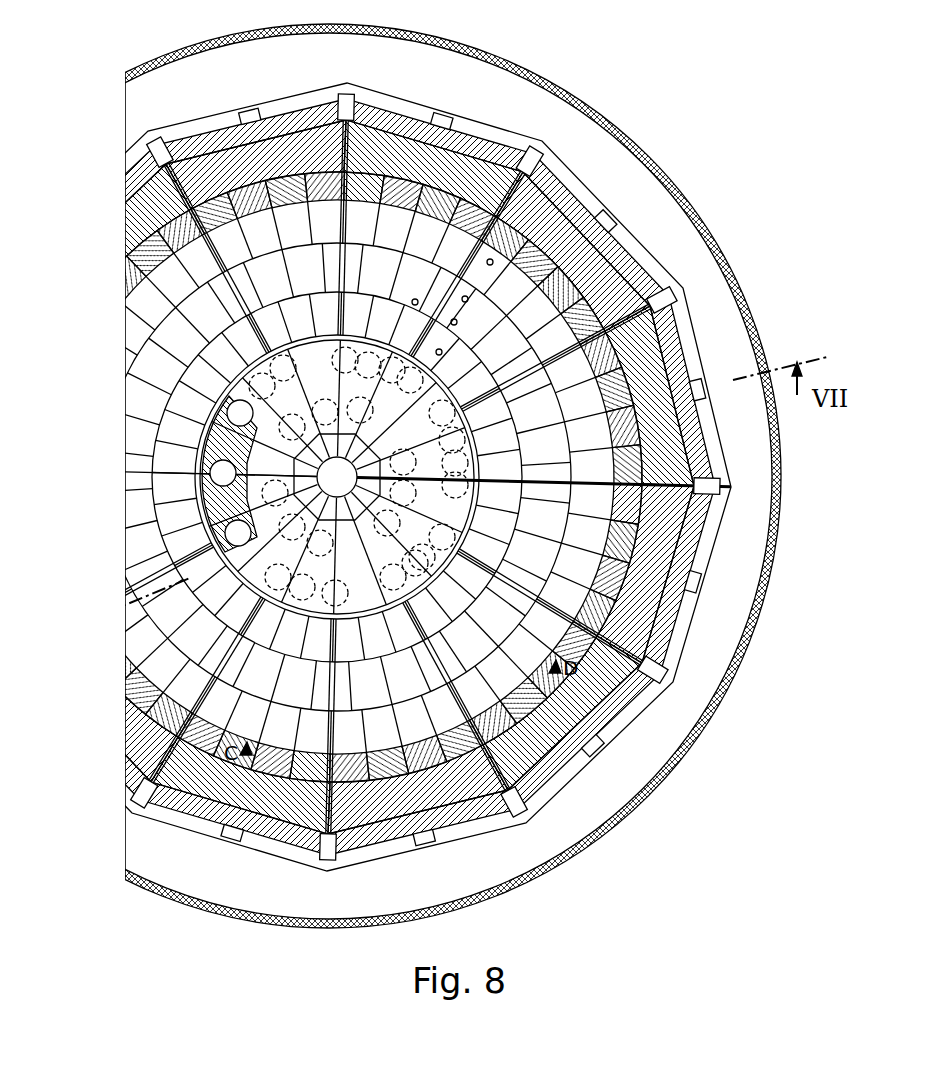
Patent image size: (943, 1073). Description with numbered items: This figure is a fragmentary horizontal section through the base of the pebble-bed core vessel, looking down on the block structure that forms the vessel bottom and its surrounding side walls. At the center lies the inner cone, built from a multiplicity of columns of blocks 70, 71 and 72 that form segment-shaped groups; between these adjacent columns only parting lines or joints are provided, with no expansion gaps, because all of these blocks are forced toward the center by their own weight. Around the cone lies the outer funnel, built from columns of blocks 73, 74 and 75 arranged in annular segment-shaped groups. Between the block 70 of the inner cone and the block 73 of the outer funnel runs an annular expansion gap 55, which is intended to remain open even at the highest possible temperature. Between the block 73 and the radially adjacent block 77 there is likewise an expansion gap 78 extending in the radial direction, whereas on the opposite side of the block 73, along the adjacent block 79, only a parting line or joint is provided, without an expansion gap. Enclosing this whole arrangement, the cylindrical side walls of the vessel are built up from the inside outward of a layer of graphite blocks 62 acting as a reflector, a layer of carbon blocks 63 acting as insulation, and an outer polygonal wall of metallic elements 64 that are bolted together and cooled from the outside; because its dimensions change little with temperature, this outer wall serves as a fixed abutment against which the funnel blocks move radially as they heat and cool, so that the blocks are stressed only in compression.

The annular expansion gap 55 is at (478, 336).
The graphite blocks 62 is at (434, 477).
The carbon blocks 63 is at (434, 477).
The outer polygonal wall of metallic elements 64 is at (434, 476).
The block of the inner cone 70 is at (390, 430).
The block of the inner cone 71 is at (372, 448).
The block of the inner cone 72 is at (330, 375).
The block of the outer funnel 73 is at (439, 350).
The block of the outer funnel 74 is at (465, 297).
The block of the outer funnel 75 is at (490, 260).
The radially adjacent block 77 is at (415, 300).
The expansion gap 78 is at (456, 322).
The adjacent block 79 is at (480, 397).